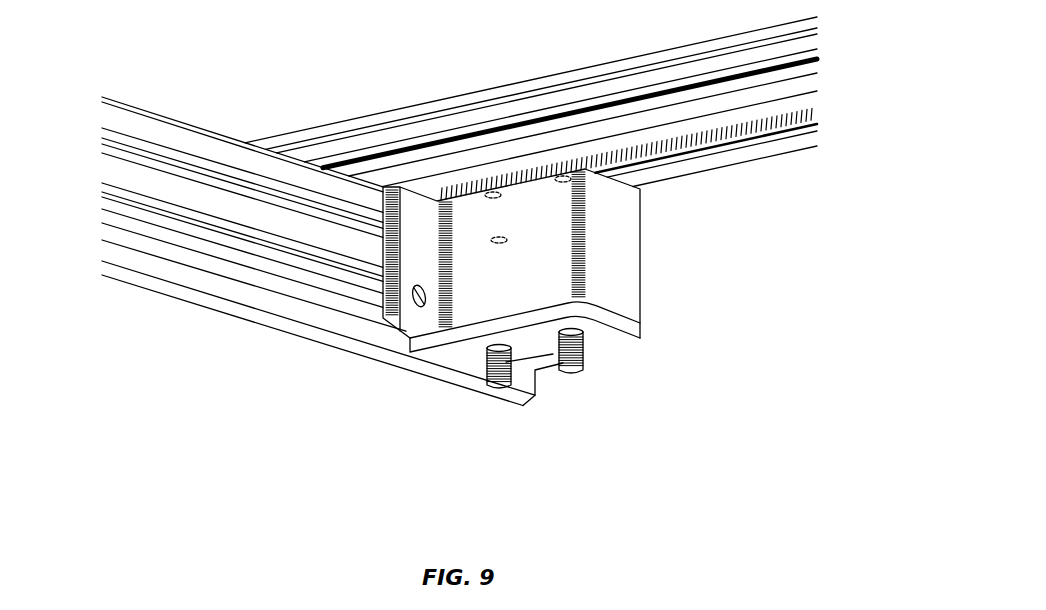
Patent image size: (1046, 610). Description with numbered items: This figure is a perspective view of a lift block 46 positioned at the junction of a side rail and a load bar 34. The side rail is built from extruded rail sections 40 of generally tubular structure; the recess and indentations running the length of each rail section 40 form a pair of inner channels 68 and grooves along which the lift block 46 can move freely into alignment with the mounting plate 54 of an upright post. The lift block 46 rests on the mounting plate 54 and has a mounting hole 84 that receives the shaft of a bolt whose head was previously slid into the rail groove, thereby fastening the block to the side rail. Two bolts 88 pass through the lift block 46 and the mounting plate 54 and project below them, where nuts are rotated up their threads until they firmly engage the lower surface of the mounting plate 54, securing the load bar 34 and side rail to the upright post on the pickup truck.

The load bar 34 is at (663, 112).
The inner channels 68 is at (157, 168).
The rail section 40 is at (257, 295).
The lift block 46 is at (627, 237).
The mounting plate 54 is at (607, 337).
The mounting hole 84 is at (427, 303).
The bolts 88 is at (569, 375).